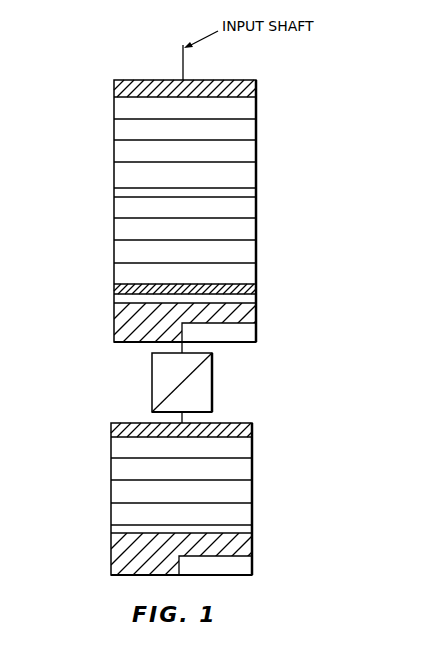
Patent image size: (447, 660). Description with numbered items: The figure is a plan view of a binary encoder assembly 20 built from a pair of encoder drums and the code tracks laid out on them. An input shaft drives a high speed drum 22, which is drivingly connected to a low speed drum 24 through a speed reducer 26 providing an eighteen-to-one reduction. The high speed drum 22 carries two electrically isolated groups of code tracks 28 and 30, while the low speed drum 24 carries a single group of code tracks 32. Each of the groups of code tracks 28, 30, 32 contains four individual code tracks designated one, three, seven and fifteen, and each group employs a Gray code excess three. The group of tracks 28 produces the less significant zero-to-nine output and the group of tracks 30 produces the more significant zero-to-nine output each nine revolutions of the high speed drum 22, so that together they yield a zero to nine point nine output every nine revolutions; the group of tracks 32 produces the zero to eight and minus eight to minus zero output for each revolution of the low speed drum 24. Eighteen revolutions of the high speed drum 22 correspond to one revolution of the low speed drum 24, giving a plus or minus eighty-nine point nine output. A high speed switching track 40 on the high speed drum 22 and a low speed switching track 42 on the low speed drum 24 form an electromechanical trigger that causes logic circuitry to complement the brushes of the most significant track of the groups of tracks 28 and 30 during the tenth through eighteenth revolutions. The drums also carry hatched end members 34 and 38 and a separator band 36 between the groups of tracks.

The binary encoder assembly 20 is at (291, 245).
The high speed drum 22 is at (252, 77).
The low speed drum 24 is at (252, 420).
The speed reducer 26 is at (214, 388).
The group of code tracks 28 is at (109, 129).
The group of code tracks 30 is at (107, 248).
The group of code tracks 32 is at (105, 476).
The end member of first coded member 34 is at (136, 81).
The separator member 36 is at (257, 289).
The end member of second coded member 38 is at (118, 424).
The high speed switching track 40 is at (105, 346).
The low speed switching track 42 is at (102, 580).